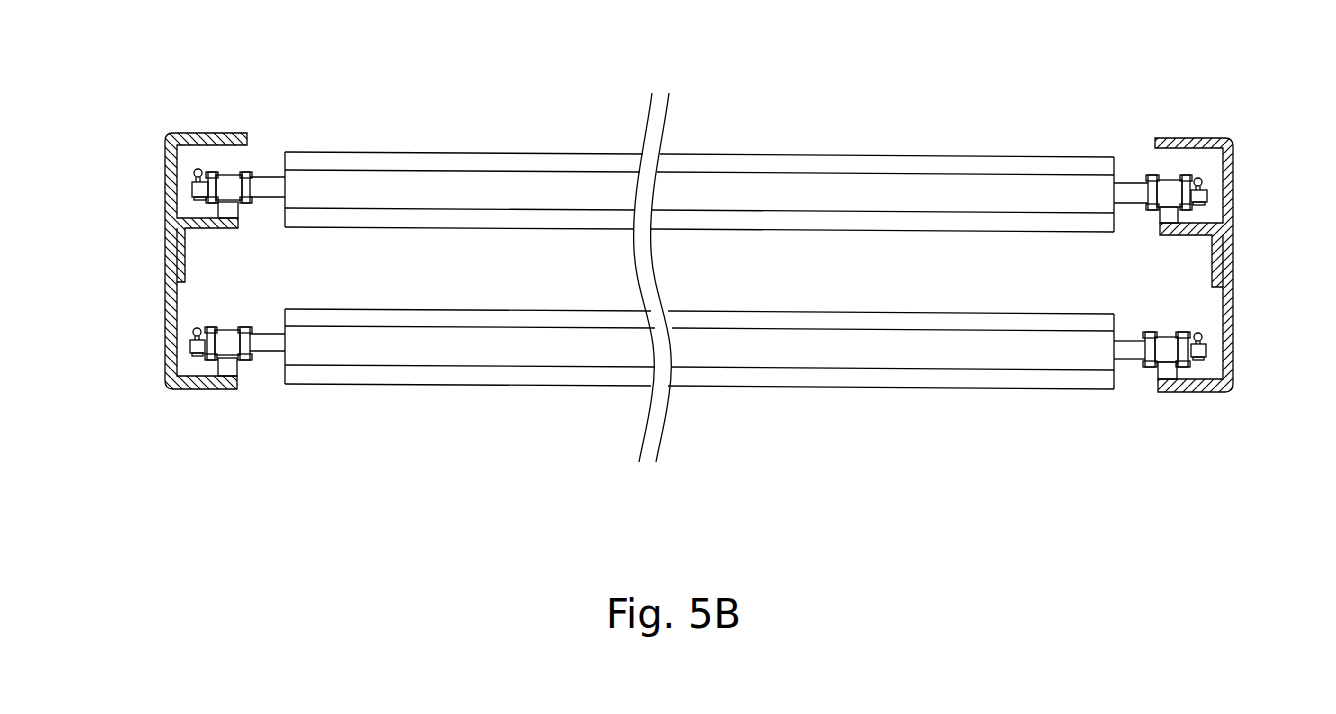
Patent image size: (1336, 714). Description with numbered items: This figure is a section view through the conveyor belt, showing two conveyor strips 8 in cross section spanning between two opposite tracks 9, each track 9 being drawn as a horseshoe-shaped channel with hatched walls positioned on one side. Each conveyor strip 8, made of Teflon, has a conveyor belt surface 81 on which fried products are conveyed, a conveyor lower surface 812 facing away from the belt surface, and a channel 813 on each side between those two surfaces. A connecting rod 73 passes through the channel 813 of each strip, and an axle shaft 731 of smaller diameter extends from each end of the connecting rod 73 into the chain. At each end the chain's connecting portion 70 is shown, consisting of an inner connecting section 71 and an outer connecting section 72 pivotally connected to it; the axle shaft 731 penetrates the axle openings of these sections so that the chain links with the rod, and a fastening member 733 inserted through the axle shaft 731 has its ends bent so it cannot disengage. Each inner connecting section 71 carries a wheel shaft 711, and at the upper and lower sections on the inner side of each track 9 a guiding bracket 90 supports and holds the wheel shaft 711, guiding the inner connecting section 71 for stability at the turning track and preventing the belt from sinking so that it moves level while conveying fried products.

The track 9 is at (205, 128).
The guiding bracket 90 is at (226, 210).
The wheel shaft 711 is at (227, 182).
The connecting portion 70 is at (708, 207).
The inner connecting section 71 is at (1183, 177).
The outer connecting section 72 is at (698, 227).
The fastening member 733 is at (197, 184).
The axle shaft 731 is at (196, 189).
The conveyor strip 8 is at (681, 255).
The conveyor belt surface 81 is at (353, 150).
The channel 813 is at (737, 170).
The connecting rod 73 is at (533, 192).
The conveyor lower surface 812 is at (302, 227).